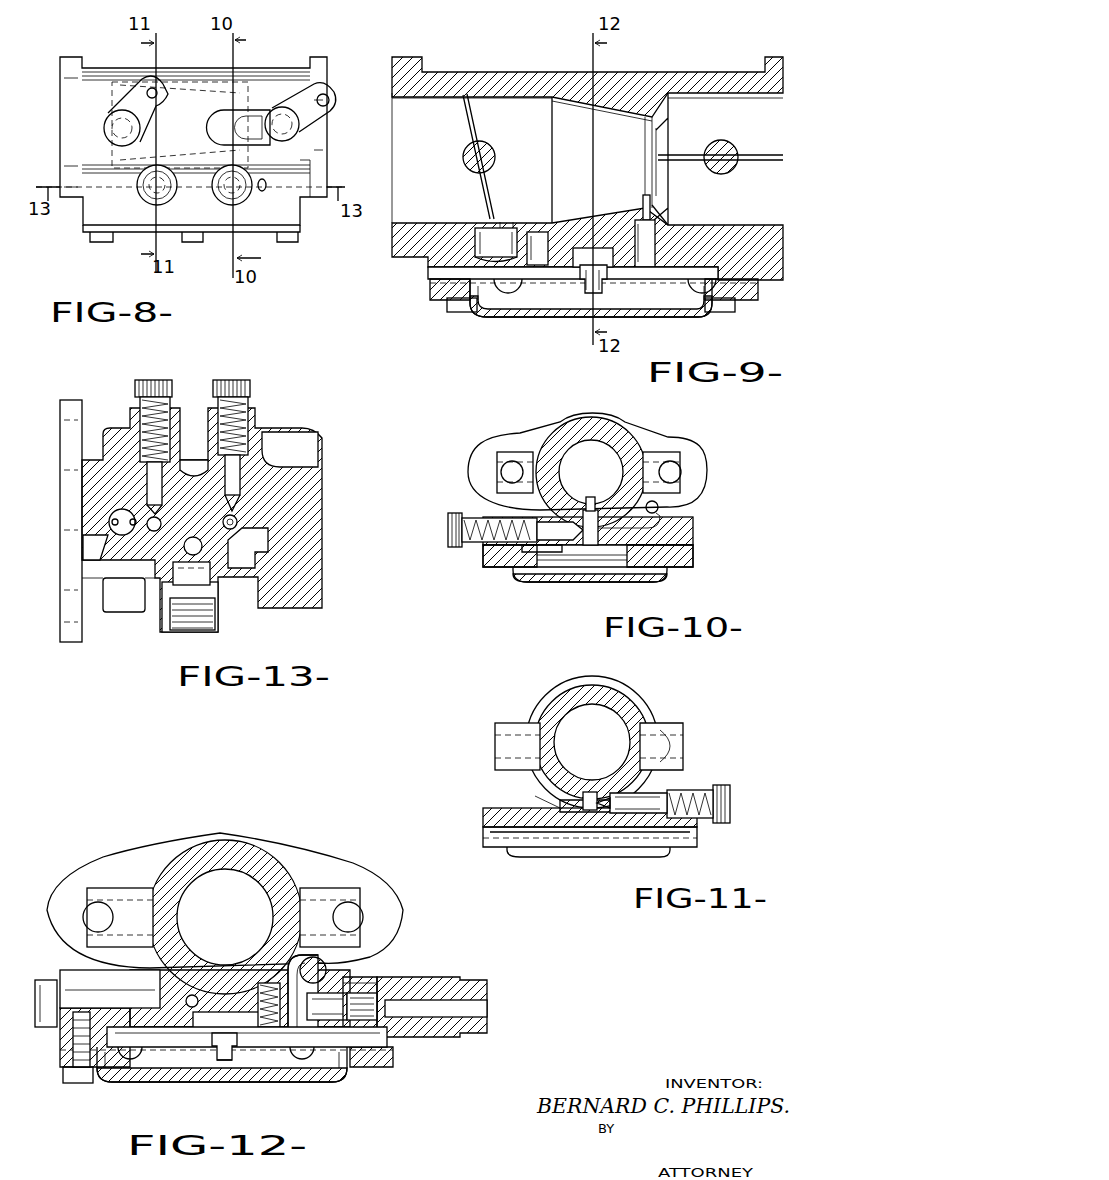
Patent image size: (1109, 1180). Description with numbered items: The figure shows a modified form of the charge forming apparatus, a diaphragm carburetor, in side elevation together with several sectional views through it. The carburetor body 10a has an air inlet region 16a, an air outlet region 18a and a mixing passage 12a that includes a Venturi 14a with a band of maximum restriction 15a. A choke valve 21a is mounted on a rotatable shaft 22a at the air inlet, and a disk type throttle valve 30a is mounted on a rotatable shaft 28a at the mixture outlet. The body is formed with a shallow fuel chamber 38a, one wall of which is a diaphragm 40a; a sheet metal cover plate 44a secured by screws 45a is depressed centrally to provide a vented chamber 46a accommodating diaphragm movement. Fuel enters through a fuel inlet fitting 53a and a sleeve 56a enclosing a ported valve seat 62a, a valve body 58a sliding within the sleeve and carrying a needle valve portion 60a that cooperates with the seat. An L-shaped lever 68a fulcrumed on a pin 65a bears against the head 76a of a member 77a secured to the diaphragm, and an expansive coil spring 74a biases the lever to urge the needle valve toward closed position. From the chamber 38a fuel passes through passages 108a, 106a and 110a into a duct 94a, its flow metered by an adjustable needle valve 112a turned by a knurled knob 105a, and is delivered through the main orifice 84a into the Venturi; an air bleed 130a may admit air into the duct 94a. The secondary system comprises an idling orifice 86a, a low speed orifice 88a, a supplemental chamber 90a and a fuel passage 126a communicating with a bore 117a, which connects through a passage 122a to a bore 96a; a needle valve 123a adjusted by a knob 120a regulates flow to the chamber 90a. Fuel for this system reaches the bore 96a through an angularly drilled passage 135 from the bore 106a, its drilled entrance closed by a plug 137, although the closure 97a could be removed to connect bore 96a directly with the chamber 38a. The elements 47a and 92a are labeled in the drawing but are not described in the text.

In FIG. 8, the carburetor body 10a is at (255, 70).
In FIG. 9, the carburetor body 10a is at (510, 75).
In FIG. 13, the carburetor body 10a is at (340, 563).
In FIG. 10, the carburetor body 10a is at (564, 422).
In FIG. 11, the carburetor body 10a is at (636, 700).
In FIG. 12, the carburetor body 10a is at (233, 835).
In FIG. 9, the mixing passage 12a is at (580, 146).
In FIG. 10, the mixing passage 12a is at (600, 445).
In FIG. 12, the mixing passage 12a is at (268, 866).
In FIG. 8, the Venturi 14a is at (240, 92).
In FIG. 9, the Venturi 14a is at (667, 116).
In FIG. 9, the band or zone of maximum restriction 15a is at (645, 148).
In FIG. 9, the air inlet region 16a is at (770, 127).
In FIG. 9, the air outlet region 18a is at (423, 134).
In FIG. 9, the choke valve 21a is at (681, 155).
In FIG. 8, the rotatable shaft 22a is at (303, 128).
In FIG. 9, the rotatable shaft 22a is at (729, 168).
In FIG. 8, the rotatable shaft 28a is at (121, 72).
In FIG. 9, the rotatable shaft 28a is at (493, 156).
In FIG. 9, the disk type throttle valve 30a is at (476, 121).
In FIG. 9, the shallow chamber or fuel passage 38a is at (680, 279).
In FIG. 10, the shallow chamber or fuel passage 38a is at (693, 548).
In FIG. 12, the shallow chamber or fuel passage 38a is at (135, 1052).
In FIG. 9, the diaphragm 40a is at (677, 306).
In FIG. 10, the diaphragm 40a is at (652, 580).
In FIG. 12, the diaphragm 40a is at (257, 1082).
In FIG. 8, the sheet metal cover plate 44a is at (226, 243).
In FIG. 9, the sheet metal cover plate 44a is at (490, 312).
In FIG. 12, the sheet metal cover plate 44a is at (180, 1083).
In FIG. 8, the screws 45a is at (98, 240).
In FIG. 9, the screws 45a is at (447, 314).
In FIG. 12, the screws 45a is at (70, 1085).
In FIG. 9, the vented chamber 46a is at (612, 318).
In FIG. 9, the float pivot 47a is at (590, 304).
In FIG. 12, the fuel inlet fitting 53a is at (445, 980).
In FIG. 12, the sleeve or fitting 56a is at (362, 1012).
In FIG. 12, the valve body 58a is at (330, 1025).
In FIG. 12, the needle valve portion 60a is at (362, 1037).
In FIG. 12, the ported valve seat 62a is at (380, 998).
In FIG. 13, the pin 65a is at (150, 588).
In FIG. 10, the pin 65a is at (660, 507).
In FIG. 12, the pin 65a is at (300, 955).
In FIG. 13, the L-shaped or angle lever 68a is at (212, 600).
In FIG. 12, the L-shaped or angle lever 68a is at (290, 1050).
In FIG. 12, the expansive coil spring 74a is at (258, 993).
In FIG. 9, the head 76a is at (585, 268).
In FIG. 12, the head 76a is at (212, 1041).
In FIG. 12, the member 77a is at (225, 1062).
In FIG. 9, the main nozzle or orifice 84a is at (645, 195).
In FIG. 13, the main nozzle or orifice 84a is at (233, 532).
In FIG. 10, the main nozzle or orifice 84a is at (599, 481).
In FIG. 9, the idling orifice 86a is at (488, 232).
In FIG. 13, the idling orifice 86a is at (110, 524).
In FIG. 9, the low speed orifice 88a is at (537, 232).
In FIG. 13, the low speed orifice 88a is at (114, 517).
In FIG. 9, the supplemental chamber 90a is at (478, 242).
In FIG. 13, the supplemental chamber 90a is at (100, 545).
In FIG. 9, the passage 92a is at (428, 262).
In FIG. 9, the duct or passage 94a is at (655, 240).
In FIG. 13, the duct or passage 94a is at (240, 524).
In FIG. 10, the duct or passage 94a is at (600, 526).
In FIG. 9, the bore 96a is at (545, 228).
In FIG. 13, the bore 96a is at (153, 532).
In FIG. 11, the bore 96a is at (558, 800).
In FIG. 9, the closure 97a is at (540, 260).
In FIG. 8, the knurled knob 105a is at (222, 197).
In FIG. 13, the knurled knob 105a is at (229, 380).
In FIG. 10, the knurled knob 105a is at (458, 547).
In FIG. 13, the passage or bore 106a is at (240, 470).
In FIG. 10, the passage or bore 106a is at (490, 514).
In FIG. 10, the passage 108a is at (540, 552).
In FIG. 13, the passage 110a is at (238, 512).
In FIG. 10, the passage 110a is at (578, 545).
In FIG. 13, the adjustable needle valve 112a is at (240, 500).
In FIG. 10, the adjustable needle valve 112a is at (562, 545).
In FIG. 13, the bore 117a is at (148, 473).
In FIG. 11, the bore 117a is at (620, 815).
In FIG. 8, the knob 120a is at (140, 196).
In FIG. 13, the knob 120a is at (162, 368).
In FIG. 11, the knob 120a is at (731, 800).
In FIG. 13, the passage 122a is at (162, 531).
In FIG. 11, the passage 122a is at (600, 795).
In FIG. 13, the needle valve 123a is at (150, 494).
In FIG. 11, the needle valve 123a is at (596, 812).
In FIG. 13, the fuel passage 126a is at (153, 510).
In FIG. 9, the air bleed 130a is at (660, 212).
In FIG. 13, the passage 135 is at (196, 461).
In FIG. 12, the passage 135 is at (194, 994).
In FIG. 13, the plug 137 is at (290, 450).